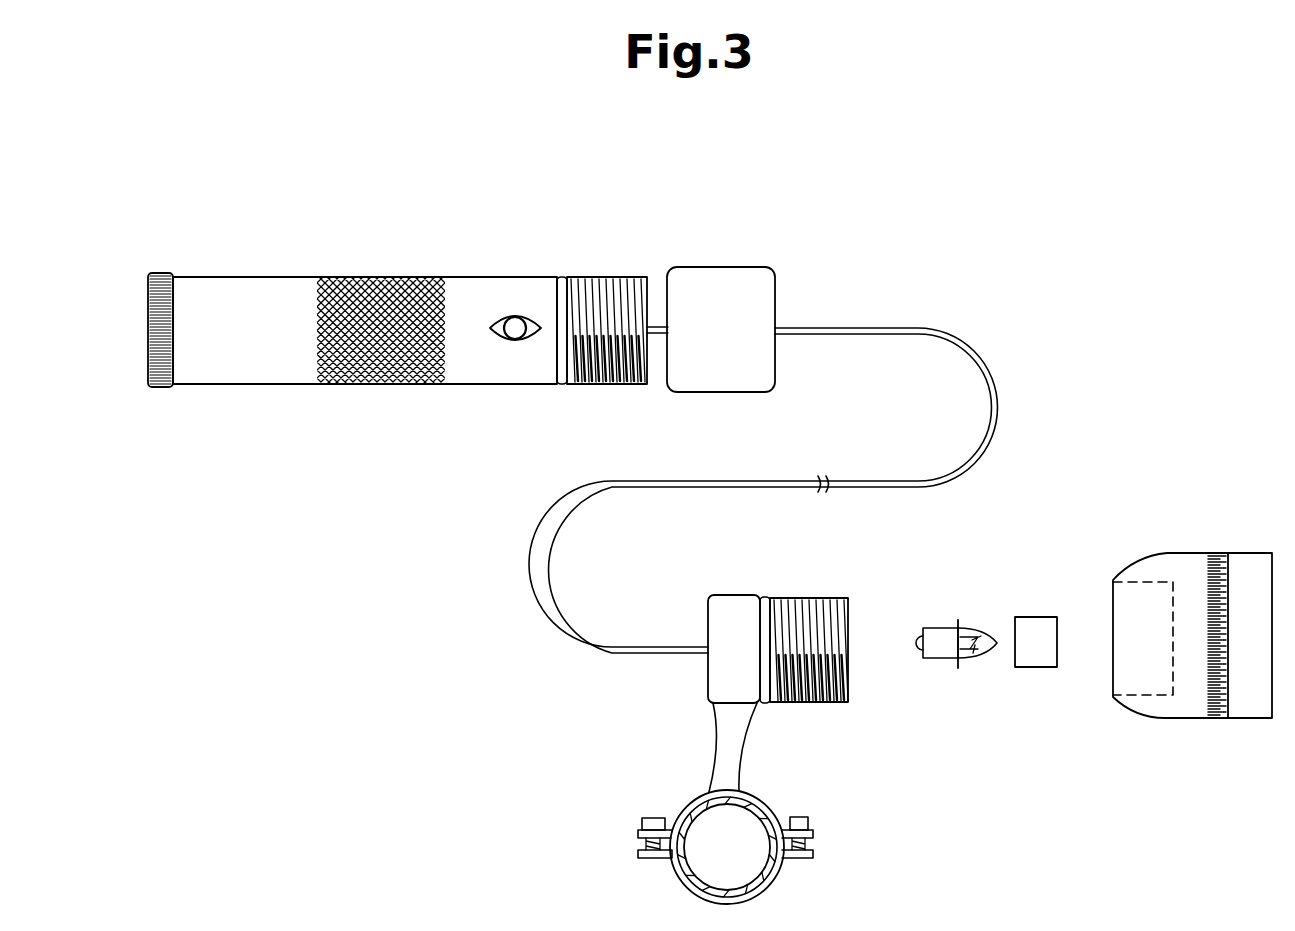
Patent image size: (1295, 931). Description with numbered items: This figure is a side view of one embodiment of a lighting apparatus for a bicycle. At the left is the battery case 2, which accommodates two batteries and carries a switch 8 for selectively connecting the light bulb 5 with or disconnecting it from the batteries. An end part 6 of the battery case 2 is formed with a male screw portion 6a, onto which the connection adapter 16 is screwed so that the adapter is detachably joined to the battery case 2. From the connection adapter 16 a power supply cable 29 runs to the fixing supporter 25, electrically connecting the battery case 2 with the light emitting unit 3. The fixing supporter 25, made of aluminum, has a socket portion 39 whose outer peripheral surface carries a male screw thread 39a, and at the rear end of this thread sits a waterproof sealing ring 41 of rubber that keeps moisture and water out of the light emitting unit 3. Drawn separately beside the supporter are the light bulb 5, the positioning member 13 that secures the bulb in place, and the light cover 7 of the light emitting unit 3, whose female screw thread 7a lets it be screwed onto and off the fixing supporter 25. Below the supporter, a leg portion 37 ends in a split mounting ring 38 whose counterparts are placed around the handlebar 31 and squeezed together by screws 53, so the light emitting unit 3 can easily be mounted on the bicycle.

The battery case 2 is at (490, 282).
The switch 8 is at (510, 338).
The male screw portion 6a is at (592, 277).
The end part 6 is at (648, 280).
The connection adapter 16 is at (762, 265).
The power supply cable 29 is at (945, 330).
The fixing supporter 25 is at (707, 610).
The waterproof sealing ring 41 is at (765, 598).
The light emitting unit 3 is at (822, 598).
The socket portion 39 is at (852, 685).
The male screw thread 39a is at (808, 705).
The light bulb 5 is at (940, 625).
The positioning member 13 is at (1037, 617).
The light cover 7 is at (1163, 708).
The female screw thread 7a is at (1163, 550).
The leg portion 37 is at (722, 725).
The split mounting ring 38 is at (688, 797).
The handlebar 31 is at (758, 800).
The screws 53 is at (640, 823).